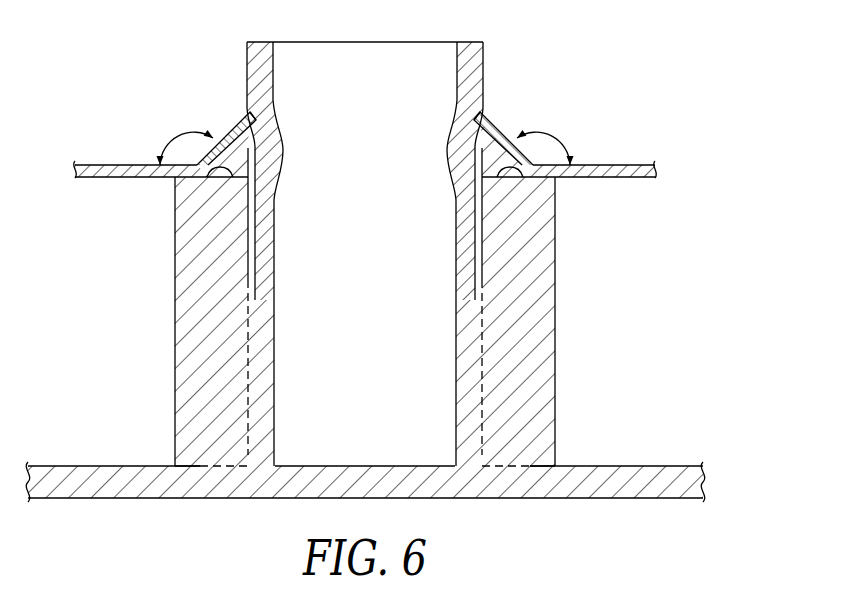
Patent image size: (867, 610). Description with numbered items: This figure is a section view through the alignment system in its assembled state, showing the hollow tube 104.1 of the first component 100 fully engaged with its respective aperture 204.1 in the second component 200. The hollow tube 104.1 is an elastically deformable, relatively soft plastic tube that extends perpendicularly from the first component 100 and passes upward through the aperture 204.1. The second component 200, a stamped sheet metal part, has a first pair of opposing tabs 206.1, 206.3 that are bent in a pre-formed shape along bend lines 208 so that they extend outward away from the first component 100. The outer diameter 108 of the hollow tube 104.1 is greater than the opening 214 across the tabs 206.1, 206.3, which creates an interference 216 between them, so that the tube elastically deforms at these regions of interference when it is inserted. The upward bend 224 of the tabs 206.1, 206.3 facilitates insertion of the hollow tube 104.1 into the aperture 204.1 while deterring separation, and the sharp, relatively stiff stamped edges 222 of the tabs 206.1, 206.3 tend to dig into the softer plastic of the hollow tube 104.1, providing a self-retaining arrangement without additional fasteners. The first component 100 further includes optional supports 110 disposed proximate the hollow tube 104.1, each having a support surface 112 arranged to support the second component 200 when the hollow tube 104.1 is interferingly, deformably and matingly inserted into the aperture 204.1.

The first component 100 is at (600, 465).
The support 110 is at (175, 283).
The support surface 112 is at (175, 208).
The outer diameter 108 is at (482, 323).
The hollow tube 104.1 is at (484, 68).
The opening 214 is at (475, 233).
The interference 216 is at (222, 283).
The second component 200 is at (633, 160).
The bend line 208 is at (172, 137).
The first opposing tab 206.1 is at (211, 135).
The second opposing tab 206.3 is at (519, 135).
The upward bend 224 is at (178, 134).
The edge 222 is at (474, 116).
The aperture 204.1 is at (233, 155).